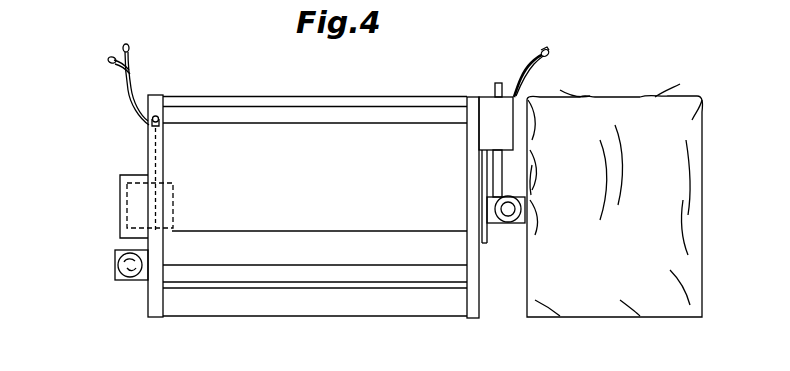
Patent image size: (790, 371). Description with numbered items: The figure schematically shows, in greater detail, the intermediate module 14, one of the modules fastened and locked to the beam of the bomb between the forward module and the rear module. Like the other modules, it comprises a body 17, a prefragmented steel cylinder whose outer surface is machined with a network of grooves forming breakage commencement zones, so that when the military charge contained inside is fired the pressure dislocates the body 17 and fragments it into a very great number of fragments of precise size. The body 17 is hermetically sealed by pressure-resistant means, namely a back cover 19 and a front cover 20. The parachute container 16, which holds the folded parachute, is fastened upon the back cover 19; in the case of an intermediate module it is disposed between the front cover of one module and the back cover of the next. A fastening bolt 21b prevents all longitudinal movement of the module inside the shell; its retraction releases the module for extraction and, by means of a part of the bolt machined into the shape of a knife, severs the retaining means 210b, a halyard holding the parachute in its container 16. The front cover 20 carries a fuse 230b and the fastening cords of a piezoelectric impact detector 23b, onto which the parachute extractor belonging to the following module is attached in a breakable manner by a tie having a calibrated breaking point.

The intermediate module 14 is at (387, 322).
The parachute container 16 is at (612, 101).
The body 17 is at (271, 318).
The back cover 19 is at (473, 97).
The front cover 20 is at (147, 318).
The fastening bolt 21b is at (505, 88).
The piezoelectric impact detector 23b is at (116, 268).
The retaining means 210b is at (506, 226).
The fuse 230b is at (135, 205).